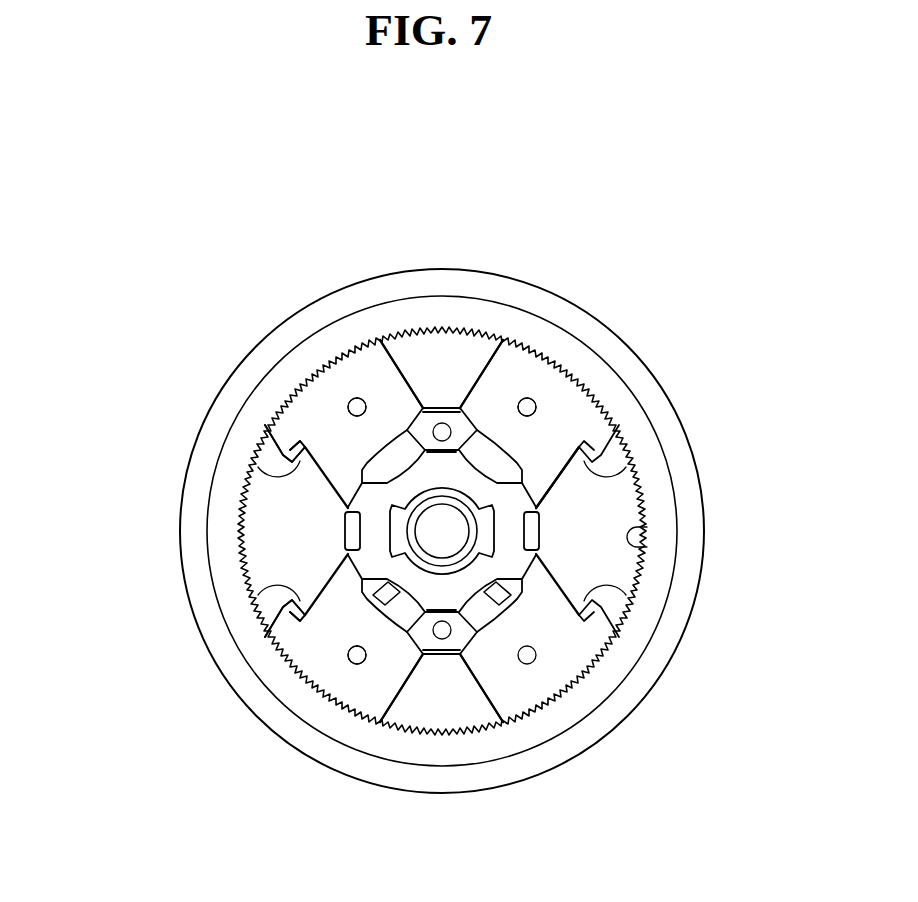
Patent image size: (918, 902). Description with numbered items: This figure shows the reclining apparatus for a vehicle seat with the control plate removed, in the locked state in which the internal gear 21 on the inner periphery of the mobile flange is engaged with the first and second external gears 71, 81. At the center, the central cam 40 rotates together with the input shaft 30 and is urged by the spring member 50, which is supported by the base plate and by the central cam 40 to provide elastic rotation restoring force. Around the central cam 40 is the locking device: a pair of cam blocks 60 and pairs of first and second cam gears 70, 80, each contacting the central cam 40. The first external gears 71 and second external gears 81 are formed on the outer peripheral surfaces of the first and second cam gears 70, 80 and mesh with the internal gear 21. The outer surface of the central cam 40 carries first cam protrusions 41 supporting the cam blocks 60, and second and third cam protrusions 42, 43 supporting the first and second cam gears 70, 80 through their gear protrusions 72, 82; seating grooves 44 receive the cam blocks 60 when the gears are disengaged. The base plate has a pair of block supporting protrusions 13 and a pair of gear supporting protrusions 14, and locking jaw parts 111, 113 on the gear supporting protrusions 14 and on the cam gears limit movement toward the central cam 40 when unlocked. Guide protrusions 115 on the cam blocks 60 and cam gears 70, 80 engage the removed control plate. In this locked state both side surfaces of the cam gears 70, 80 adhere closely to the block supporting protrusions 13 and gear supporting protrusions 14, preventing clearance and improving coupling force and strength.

The block supporting protrusions 13 is at (430, 350).
The gear supporting protrusions 14 is at (270, 527).
The internal gear 21 is at (700, 547).
The input shaft 30 is at (437, 545).
The central cam 40 is at (520, 680).
The first cam protrusions 41 is at (452, 425).
The second cam protrusions 42 is at (362, 498).
The third cam protrusions 43 is at (540, 500).
The seating grooves 44 is at (545, 500).
The spring member 50 is at (400, 620).
The cam blocks 60 is at (400, 427).
The first cam gears 70 is at (322, 415).
The first external gears 71 is at (357, 403).
The gear protrusions 72 is at (305, 500).
The second cam gears 80 is at (565, 400).
The second external gears 81 is at (600, 365).
The gear protrusions 82 is at (648, 537).
The locking jaw parts 111 is at (270, 410).
The locking jaw parts 113 is at (288, 450).
The guide protrusions 115 is at (327, 387).